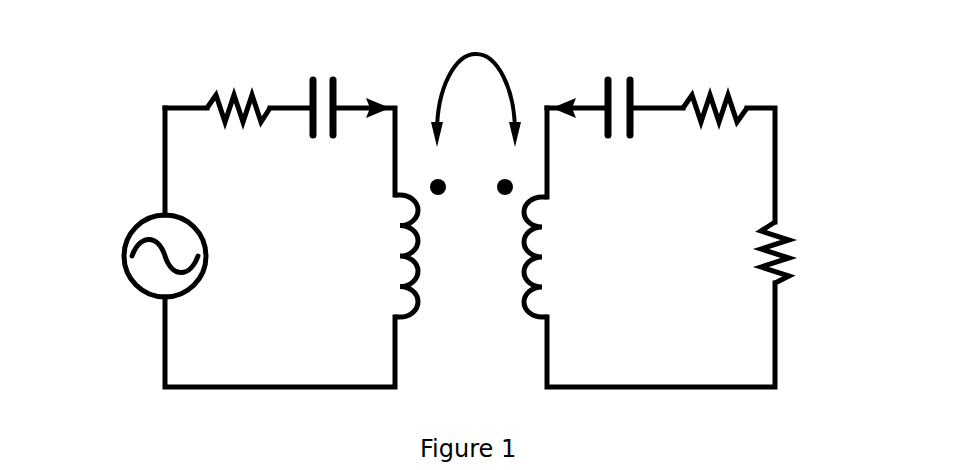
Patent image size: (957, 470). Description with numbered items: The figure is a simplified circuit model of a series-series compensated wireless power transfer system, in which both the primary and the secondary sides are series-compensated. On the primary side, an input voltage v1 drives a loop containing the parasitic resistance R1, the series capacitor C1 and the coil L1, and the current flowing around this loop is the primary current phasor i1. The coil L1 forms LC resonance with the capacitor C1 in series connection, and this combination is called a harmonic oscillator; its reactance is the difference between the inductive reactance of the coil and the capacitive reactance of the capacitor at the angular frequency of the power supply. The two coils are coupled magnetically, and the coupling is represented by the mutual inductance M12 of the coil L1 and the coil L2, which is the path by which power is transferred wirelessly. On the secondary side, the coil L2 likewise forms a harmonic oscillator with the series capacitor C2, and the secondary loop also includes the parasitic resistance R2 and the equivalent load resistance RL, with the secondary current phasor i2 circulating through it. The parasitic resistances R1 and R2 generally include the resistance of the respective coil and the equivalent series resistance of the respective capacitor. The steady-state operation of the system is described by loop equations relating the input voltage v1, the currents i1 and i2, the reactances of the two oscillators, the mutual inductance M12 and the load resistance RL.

The input voltage v1 is at (139, 256).
The parasitic resistance R1 is at (238, 79).
The capacitor C1 is at (320, 83).
The current phasor i1 is at (378, 90).
The coil L1 is at (377, 256).
The mutual inductance M12 is at (475, 105).
The coil L2 is at (569, 257).
The current phasor i2 is at (562, 89).
The capacitor C2 is at (622, 82).
The parasitic resistance R2 is at (715, 79).
The equivalent load resistance RL is at (803, 252).